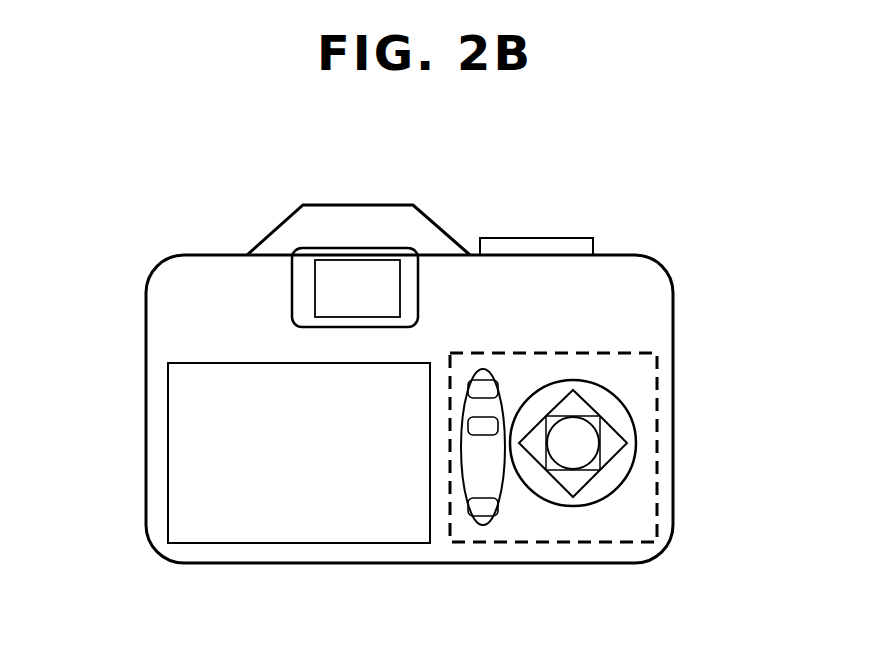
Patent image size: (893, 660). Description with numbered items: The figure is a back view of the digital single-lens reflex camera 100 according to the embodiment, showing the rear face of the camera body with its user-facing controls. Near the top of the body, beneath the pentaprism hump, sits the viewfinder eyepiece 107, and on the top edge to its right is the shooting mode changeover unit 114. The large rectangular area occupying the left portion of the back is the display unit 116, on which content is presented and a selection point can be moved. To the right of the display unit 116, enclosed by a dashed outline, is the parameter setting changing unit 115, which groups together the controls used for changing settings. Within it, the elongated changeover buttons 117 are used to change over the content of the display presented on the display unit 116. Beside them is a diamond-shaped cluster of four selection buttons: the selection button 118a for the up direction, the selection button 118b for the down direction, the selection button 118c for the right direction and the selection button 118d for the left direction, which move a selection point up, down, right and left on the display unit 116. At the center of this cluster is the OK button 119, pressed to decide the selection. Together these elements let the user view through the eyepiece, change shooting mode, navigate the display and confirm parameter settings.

The digital camera body 100 is at (343, 563).
The viewfinder eyepiece 107 is at (359, 257).
The shooting mode changeover unit 114 is at (537, 247).
The parameter setting changing unit 115 is at (482, 545).
The display unit 116 is at (212, 545).
The changeover buttons 117 is at (488, 373).
The selection button (up direction) 118a is at (578, 405).
The selection button (down direction) 118b is at (580, 482).
The selection button (right direction) 118c is at (612, 439).
The selection button (left direction) 118d is at (530, 448).
The OK button 119 is at (587, 458).